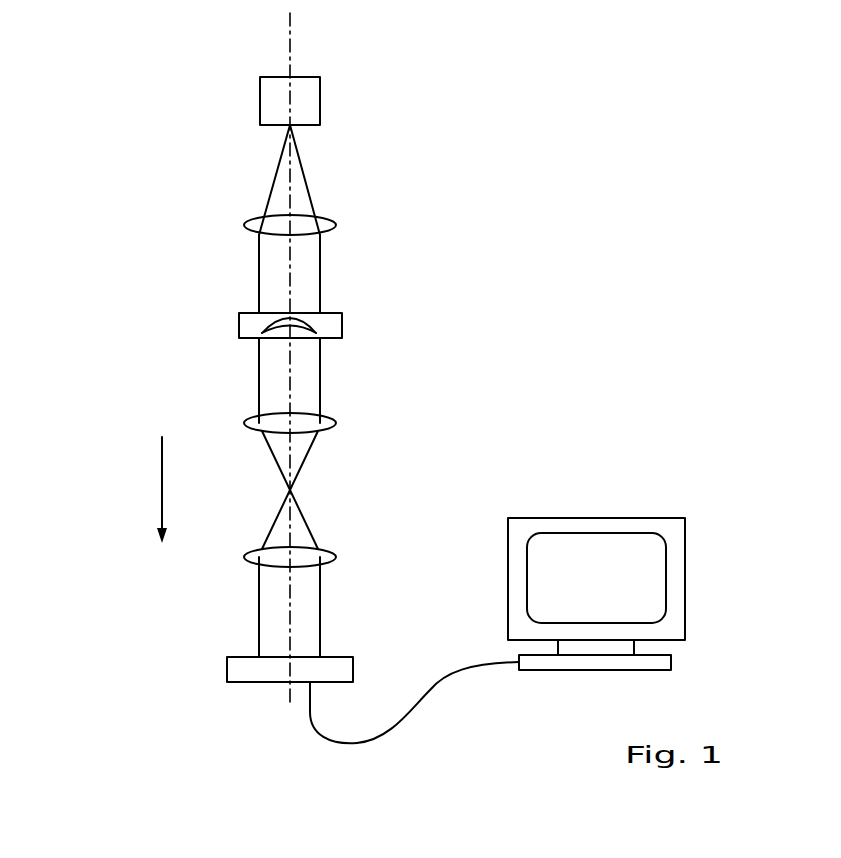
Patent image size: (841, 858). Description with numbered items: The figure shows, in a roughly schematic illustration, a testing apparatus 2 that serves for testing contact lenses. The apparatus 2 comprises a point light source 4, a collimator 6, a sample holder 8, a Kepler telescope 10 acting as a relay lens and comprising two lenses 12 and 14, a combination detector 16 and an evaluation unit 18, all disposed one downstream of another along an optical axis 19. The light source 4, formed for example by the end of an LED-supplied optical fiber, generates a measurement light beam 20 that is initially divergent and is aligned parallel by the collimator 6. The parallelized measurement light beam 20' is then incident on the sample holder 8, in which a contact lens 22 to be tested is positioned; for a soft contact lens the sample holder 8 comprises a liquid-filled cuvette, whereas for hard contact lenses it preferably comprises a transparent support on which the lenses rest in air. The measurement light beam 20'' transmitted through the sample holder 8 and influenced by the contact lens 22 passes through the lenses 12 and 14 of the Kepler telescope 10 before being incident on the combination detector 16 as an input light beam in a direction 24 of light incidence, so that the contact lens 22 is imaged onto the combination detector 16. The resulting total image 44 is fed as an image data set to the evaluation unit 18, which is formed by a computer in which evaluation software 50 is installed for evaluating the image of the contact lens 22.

The testing apparatus 2 is at (561, 230).
The light source 4 is at (259, 90).
The collimator 6 is at (334, 223).
The sample holder 8 is at (342, 325).
The Kepler telescope 10 is at (362, 490).
The lens 12 is at (336, 423).
The lens 14 is at (336, 557).
The combination detector 16 is at (227, 677).
The evaluation unit 18 is at (650, 518).
The optical axis 19 is at (292, 45).
The measurement light beam 20 is at (223, 175).
The parallelized measurement light beam 20' is at (219, 263).
The transmitted measurement light beam 20'' is at (214, 484).
The contact lens 22 is at (321, 324).
The direction of light incidence 24 is at (162, 479).
The total image 44 is at (323, 732).
The evaluation software 50 is at (644, 575).